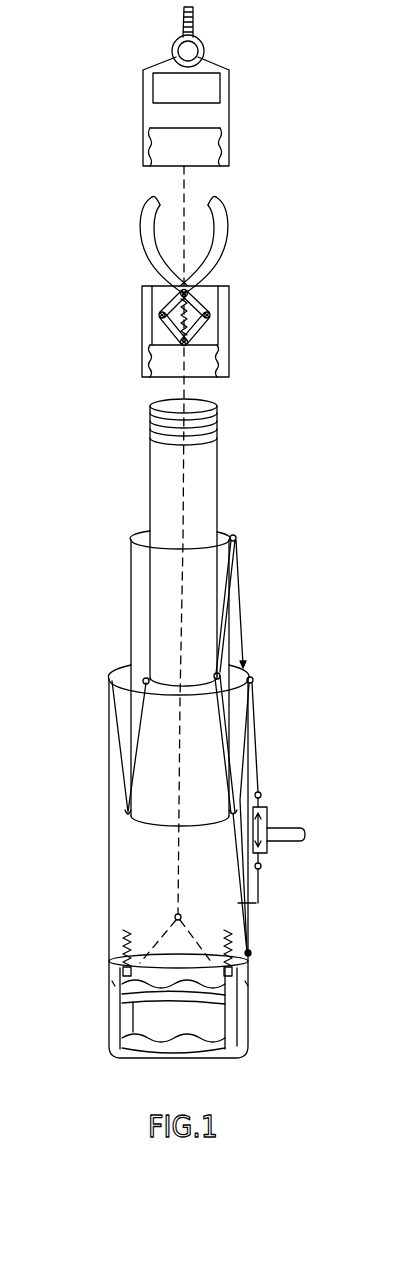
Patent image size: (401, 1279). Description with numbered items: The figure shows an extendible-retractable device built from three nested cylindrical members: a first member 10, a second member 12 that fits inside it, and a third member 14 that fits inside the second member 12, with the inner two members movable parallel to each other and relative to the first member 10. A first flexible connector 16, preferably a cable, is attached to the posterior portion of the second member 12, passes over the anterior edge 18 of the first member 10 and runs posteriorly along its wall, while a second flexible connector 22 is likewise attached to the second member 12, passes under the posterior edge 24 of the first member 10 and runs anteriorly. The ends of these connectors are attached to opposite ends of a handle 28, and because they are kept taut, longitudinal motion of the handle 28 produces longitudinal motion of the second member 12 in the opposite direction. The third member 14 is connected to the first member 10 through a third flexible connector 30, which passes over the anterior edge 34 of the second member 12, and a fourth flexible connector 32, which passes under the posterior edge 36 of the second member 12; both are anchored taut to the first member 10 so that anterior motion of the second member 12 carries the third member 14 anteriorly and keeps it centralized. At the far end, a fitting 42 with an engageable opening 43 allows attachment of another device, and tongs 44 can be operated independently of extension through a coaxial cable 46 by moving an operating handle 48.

The first member 10 is at (125, 913).
The second member 12 is at (131, 578).
The third member 14 is at (167, 468).
The first flexible connector 16 is at (243, 724).
The anterior edge 18 is at (247, 676).
The second flexible connector 22 is at (257, 893).
The posterior edge 24 is at (250, 955).
The handle 28 is at (285, 832).
The third flexible connector 30 is at (232, 577).
The fourth flexible connector 32 is at (118, 742).
The anterior edge 34 is at (236, 538).
The posterior edge 36 is at (128, 814).
The fitting 42 is at (197, 22).
The engageable opening 43 is at (184, 52).
The tongs 44 is at (222, 246).
The coaxial cable 46 is at (175, 880).
The operating handle 48 is at (205, 1050).